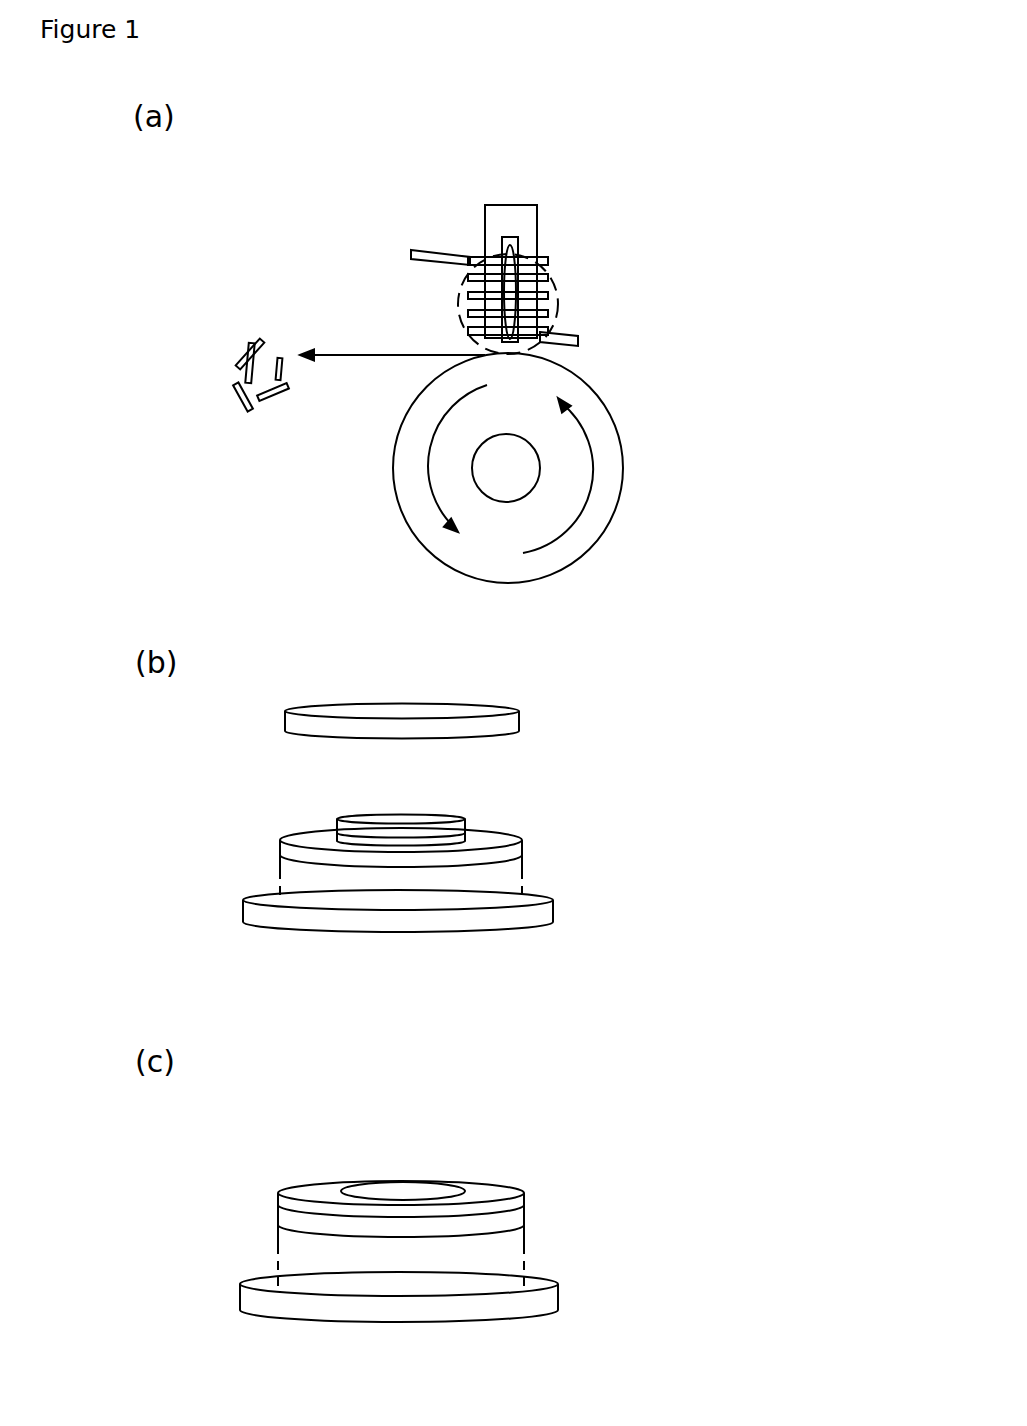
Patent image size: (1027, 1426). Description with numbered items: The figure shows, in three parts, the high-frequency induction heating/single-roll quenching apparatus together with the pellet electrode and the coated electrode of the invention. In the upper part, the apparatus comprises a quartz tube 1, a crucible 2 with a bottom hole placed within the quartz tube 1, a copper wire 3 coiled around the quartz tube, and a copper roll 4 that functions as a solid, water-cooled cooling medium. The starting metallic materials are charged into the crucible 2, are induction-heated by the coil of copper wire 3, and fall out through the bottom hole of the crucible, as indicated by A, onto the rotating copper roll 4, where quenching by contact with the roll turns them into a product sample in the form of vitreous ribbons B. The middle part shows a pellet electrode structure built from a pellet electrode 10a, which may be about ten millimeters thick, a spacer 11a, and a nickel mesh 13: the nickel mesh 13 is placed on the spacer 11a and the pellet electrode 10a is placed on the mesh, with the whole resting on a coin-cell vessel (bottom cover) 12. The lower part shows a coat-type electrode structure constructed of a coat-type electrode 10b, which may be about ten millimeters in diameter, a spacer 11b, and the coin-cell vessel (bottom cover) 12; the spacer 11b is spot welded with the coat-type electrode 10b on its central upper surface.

The quartz tube 1 is at (561, 219).
The crucible with a bottom hole 2 is at (458, 226).
The copper wire 3 is at (456, 268).
The copper roll 4 is at (610, 405).
The falling of heated starting materials A is at (448, 303).
The vitreous ribbons B is at (250, 333).
The nickel mesh 13 is at (535, 724).
The pellet electrode 10a is at (519, 781).
The spacer 11a is at (535, 853).
The coin-cell vessel (bottom cover) 12 is at (560, 917).
The coat-type electrode 10b is at (485, 1161).
The spacer 11b is at (539, 1215).